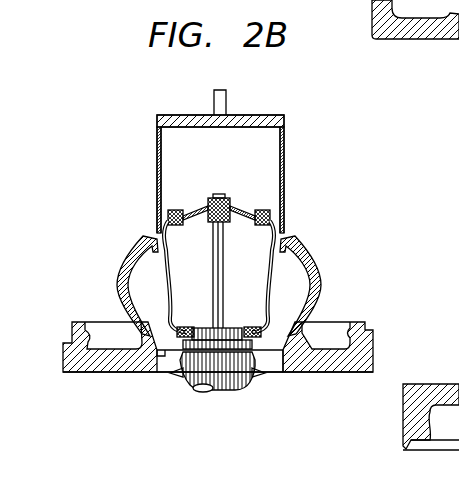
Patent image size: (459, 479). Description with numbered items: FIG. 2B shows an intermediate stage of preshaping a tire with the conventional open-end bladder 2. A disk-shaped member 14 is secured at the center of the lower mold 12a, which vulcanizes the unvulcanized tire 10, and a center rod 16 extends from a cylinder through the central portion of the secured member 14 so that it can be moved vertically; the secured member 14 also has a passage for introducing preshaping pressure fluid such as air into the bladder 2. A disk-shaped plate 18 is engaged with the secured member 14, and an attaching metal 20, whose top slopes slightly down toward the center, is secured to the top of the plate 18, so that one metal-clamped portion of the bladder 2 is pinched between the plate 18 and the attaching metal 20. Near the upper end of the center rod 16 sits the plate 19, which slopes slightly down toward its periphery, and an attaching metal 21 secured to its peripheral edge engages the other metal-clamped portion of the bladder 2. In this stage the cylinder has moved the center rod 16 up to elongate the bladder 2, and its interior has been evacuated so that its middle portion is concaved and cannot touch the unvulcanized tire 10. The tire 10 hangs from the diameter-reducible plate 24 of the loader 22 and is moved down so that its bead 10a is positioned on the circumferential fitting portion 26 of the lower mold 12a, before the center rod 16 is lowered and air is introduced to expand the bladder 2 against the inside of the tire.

The bladder 2 is at (276, 270).
The unvulcanized tire 10 is at (310, 250).
The bead 10a is at (142, 366).
The lower mold 12a is at (434, 43).
The disk-shaped member 14 is at (224, 380).
The center rod 16 is at (224, 241).
The disk-shaped plate 18 is at (180, 377).
The disk-shaped plate 19 is at (199, 208).
The attaching metal 20 is at (181, 328).
The attaching metal 21 is at (174, 208).
The loader 22 is at (243, 110).
The diameter-reducible plate 24 is at (285, 167).
The circumferential fitting portion 26 is at (299, 362).